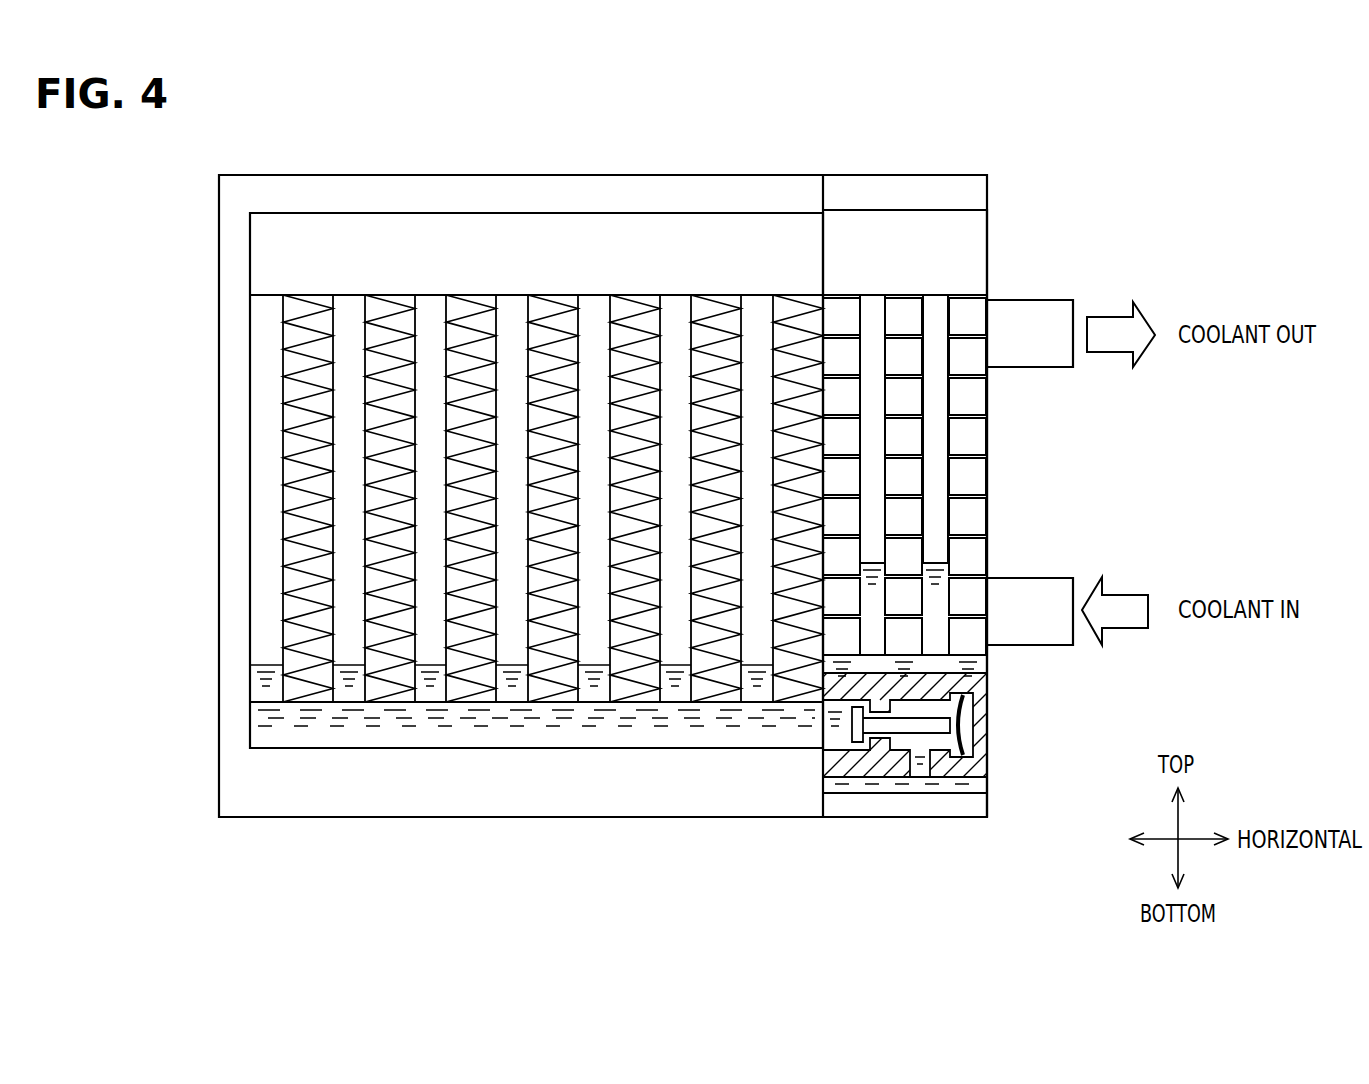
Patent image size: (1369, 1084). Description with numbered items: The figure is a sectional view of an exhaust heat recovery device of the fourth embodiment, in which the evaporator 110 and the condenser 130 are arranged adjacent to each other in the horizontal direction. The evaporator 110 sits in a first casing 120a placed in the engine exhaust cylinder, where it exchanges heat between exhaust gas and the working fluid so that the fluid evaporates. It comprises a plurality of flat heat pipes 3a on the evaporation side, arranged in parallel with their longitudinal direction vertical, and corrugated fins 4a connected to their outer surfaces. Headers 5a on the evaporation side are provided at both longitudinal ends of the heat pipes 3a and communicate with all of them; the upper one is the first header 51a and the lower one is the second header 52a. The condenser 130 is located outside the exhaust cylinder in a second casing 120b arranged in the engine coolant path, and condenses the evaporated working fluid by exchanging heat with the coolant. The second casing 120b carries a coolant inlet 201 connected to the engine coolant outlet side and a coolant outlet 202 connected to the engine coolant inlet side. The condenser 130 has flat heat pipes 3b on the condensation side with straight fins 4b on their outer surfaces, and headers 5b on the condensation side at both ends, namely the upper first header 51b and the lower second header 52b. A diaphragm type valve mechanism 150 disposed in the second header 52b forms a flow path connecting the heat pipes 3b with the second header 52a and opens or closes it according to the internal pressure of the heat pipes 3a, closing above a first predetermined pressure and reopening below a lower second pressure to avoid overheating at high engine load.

The evaporator 110 is at (536, 402).
The heat pipes on the evaporation side 3a is at (393, 295).
The corrugated fins 4a is at (471, 297).
The first header on the evaporation side 51a is at (662, 242).
The headers on the evaporation side 5a is at (451, 426).
The second header on the evaporation side 52a is at (257, 728).
The first casing 120a is at (219, 352).
The condenser 130 is at (935, 379).
The heat pipes on the condensation side 3b is at (987, 397).
The straight fins 4b is at (987, 530).
The first header on the condensation side 51b is at (957, 228).
The headers on the condensation side 5b is at (948, 517).
The second header on the condensation side 52b is at (860, 792).
The second casing 120b is at (987, 490).
The valve mechanism 150 is at (918, 735).
The coolant inlet 201 is at (1037, 632).
The coolant outlet 202 is at (1035, 315).